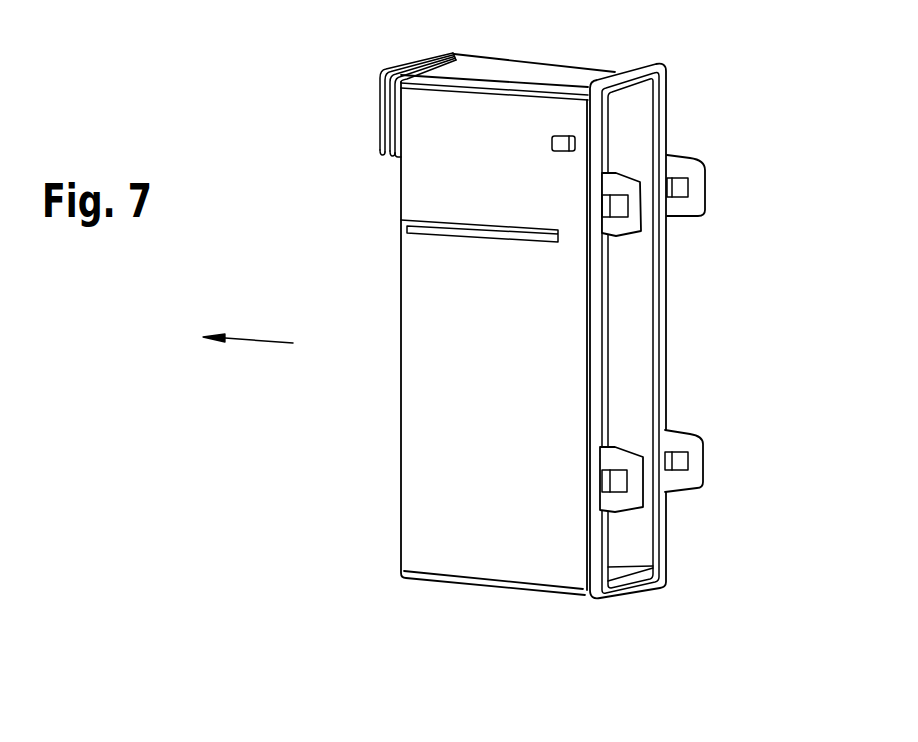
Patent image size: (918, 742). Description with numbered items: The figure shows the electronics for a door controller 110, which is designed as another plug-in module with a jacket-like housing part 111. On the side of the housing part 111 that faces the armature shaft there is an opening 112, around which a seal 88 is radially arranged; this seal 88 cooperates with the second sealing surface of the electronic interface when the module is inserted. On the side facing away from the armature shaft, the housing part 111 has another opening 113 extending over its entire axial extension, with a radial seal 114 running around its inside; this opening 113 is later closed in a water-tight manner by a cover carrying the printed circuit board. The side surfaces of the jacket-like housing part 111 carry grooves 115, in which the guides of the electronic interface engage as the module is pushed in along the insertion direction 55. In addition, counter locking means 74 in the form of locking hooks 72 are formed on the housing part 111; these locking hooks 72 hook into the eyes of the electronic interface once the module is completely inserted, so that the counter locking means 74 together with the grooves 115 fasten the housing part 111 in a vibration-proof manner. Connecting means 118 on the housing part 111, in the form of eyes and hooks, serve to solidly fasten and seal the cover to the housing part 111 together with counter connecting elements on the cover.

The insertion direction 55 is at (257, 343).
The locking hooks 72 is at (558, 76).
The counter locking means 74 is at (548, 137).
The seal 88 is at (410, 63).
The door controller 110 is at (497, 300).
The jacket-like housing part 111 is at (455, 387).
The opening 112 is at (437, 298).
The opening 113 is at (618, 312).
The radial seal 114 is at (691, 331).
The grooves 115 is at (448, 226).
The connecting means 118 is at (695, 192).